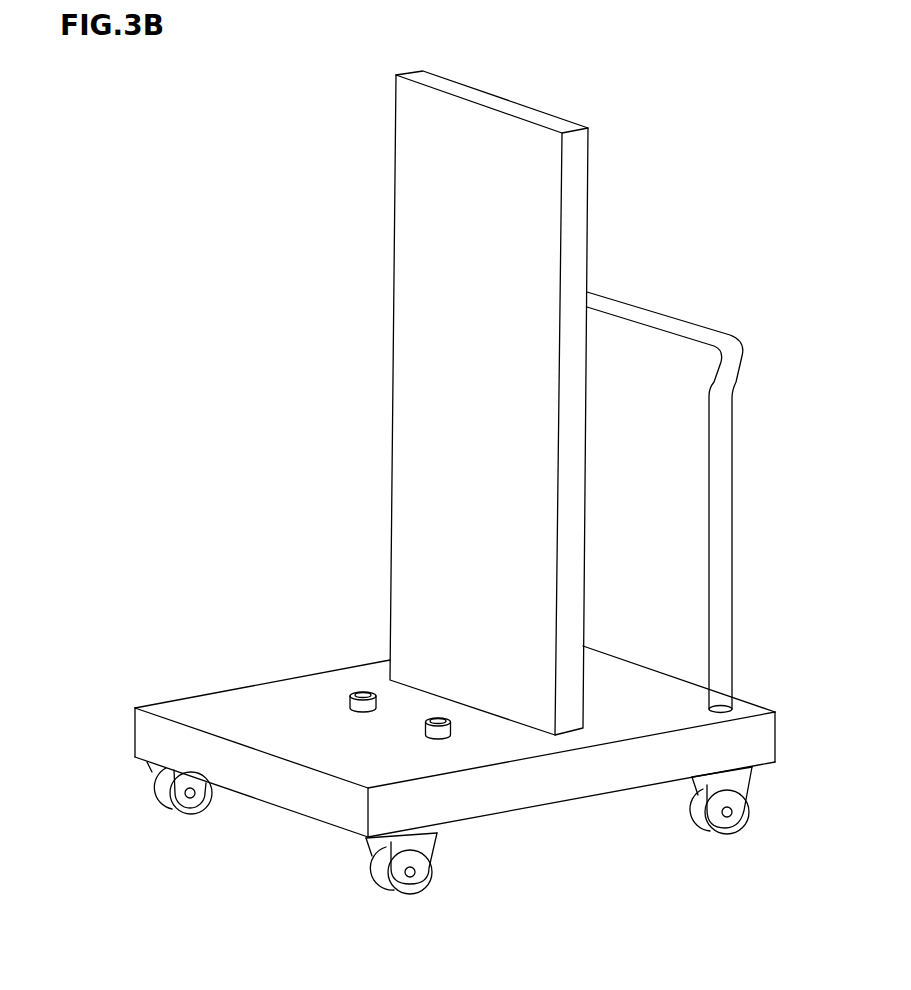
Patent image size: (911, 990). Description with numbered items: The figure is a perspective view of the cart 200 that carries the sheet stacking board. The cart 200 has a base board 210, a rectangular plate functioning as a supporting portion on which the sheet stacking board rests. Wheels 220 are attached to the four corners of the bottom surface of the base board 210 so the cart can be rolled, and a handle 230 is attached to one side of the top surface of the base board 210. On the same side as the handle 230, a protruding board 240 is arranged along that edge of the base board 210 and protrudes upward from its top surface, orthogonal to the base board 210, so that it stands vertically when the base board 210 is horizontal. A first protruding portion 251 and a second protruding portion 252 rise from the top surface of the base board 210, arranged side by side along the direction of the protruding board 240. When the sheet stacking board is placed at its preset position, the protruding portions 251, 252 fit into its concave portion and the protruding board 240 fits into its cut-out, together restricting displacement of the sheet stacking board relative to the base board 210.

The cart 200 is at (784, 81).
The base board 210 is at (255, 777).
The wheels 220 is at (148, 800).
The handle 230 is at (695, 326).
The protruding board 240 is at (481, 90).
The first protruding portion 251 is at (362, 690).
The second protruding portion 252 is at (443, 717).